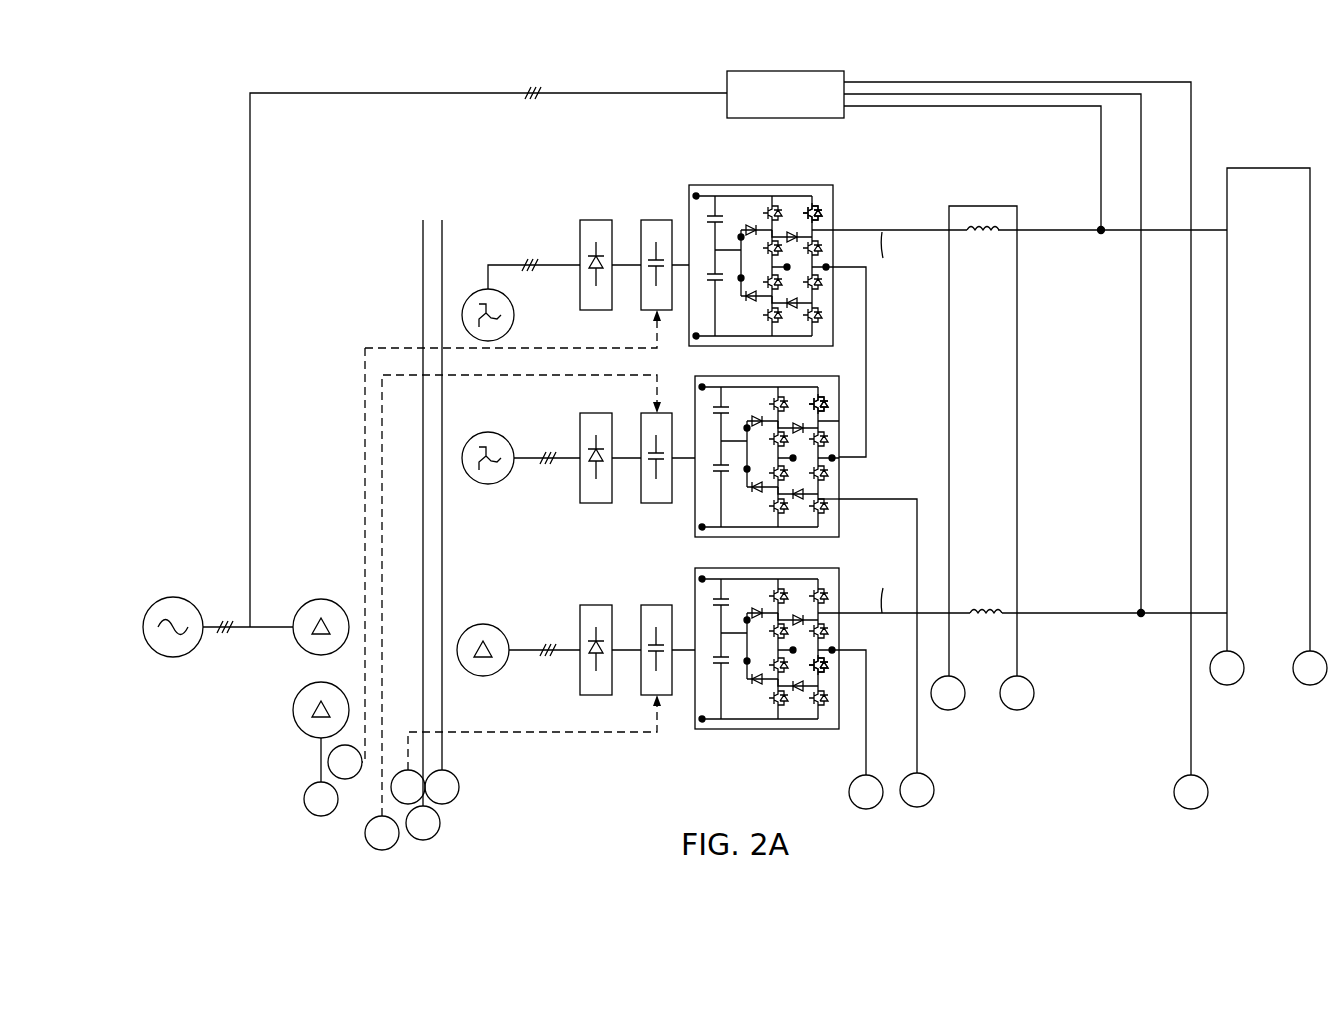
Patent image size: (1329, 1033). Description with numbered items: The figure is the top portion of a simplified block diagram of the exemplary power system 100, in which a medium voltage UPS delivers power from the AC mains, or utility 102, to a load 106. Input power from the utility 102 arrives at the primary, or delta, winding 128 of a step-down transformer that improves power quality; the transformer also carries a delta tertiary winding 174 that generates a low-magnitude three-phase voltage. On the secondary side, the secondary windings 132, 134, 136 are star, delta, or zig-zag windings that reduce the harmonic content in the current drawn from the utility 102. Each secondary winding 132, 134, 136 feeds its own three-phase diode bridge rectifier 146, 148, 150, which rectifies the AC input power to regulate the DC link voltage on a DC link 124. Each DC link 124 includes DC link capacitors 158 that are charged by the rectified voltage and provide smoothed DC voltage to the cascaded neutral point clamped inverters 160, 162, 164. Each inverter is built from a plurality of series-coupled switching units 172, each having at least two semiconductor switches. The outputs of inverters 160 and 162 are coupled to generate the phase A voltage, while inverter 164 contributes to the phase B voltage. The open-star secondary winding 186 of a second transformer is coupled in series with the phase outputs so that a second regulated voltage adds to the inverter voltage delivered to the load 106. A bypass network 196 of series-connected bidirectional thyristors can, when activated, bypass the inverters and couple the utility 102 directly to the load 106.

The power system 100 is at (230, 80).
The utility 102 is at (175, 597).
The load 106 is at (1268, 168).
The DC link 124 is at (645, 205).
The primary winding 128 is at (318, 599).
The secondary winding 132 is at (477, 290).
The secondary winding 134 is at (477, 433).
The secondary winding 136 is at (472, 625).
The three-phase rectifier 146 is at (596, 220).
The three-phase rectifier 148 is at (596, 413).
The three-phase rectifier 150 is at (596, 605).
The DC link capacitors 158 is at (652, 255).
The neutral point clamped inverter 160 is at (770, 185).
The neutral point clamped inverter 162 is at (770, 376).
The neutral point clamped inverter 164 is at (765, 568).
The switching unit 172 is at (832, 229).
The tertiary winding 174 is at (293, 710).
The open-star secondary winding 186 is at (1017, 360).
The bypass network 196 is at (787, 71).